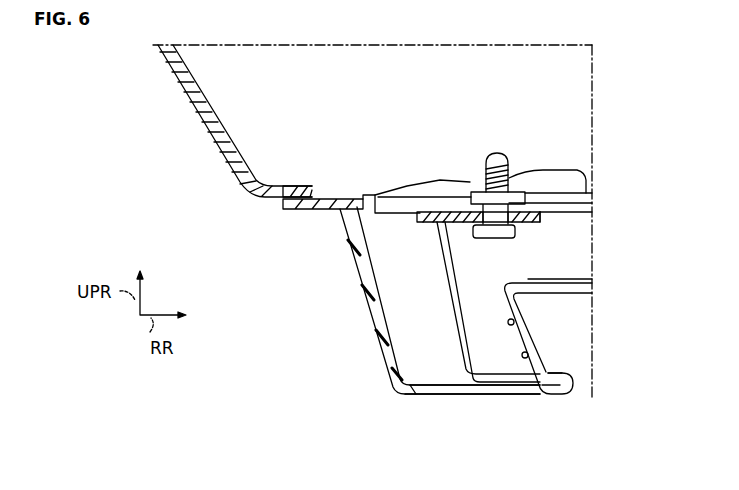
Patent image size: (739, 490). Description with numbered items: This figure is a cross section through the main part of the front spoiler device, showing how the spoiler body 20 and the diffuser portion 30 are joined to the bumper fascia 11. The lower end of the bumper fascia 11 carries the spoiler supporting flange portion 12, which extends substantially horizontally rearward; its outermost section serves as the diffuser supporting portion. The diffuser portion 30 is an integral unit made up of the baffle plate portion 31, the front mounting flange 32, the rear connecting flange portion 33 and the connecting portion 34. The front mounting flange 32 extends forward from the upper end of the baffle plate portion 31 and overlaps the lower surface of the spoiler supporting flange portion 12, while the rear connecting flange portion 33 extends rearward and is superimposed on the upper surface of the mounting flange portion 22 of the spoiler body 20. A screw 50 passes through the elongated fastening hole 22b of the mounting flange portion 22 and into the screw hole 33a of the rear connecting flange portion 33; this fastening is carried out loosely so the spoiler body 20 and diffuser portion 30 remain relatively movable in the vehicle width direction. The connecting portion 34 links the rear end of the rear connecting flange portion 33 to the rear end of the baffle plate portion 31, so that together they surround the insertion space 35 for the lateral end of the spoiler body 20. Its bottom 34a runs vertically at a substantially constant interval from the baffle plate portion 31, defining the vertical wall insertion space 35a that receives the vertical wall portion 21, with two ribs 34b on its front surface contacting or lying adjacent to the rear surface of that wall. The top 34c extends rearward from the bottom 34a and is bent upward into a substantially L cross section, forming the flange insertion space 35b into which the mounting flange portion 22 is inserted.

The bumper fascia 11 is at (202, 125).
The spoiler supporting flange portion 12 is at (300, 186).
The spoiler body 20 is at (446, 302).
The vertical wall portion 21 is at (558, 242).
The mounting flange portion 22 is at (446, 223).
The fastening hole 22b is at (481, 208).
The diffuser portion 30 is at (350, 268).
The baffle plate portion 31 is at (376, 344).
The front mounting flange 32 is at (304, 209).
The rear connecting flange portion 33 is at (426, 197).
The screw hole 33a is at (509, 198).
The connecting portion 34 is at (560, 332).
The bottom 34a is at (548, 371).
The rib 34b is at (509, 326).
The top 34c is at (580, 278).
The insertion space 35 is at (526, 271).
The vertical wall insertion space 35a is at (418, 395).
The flange insertion space 35b is at (548, 232).
The screw 50 is at (500, 152).